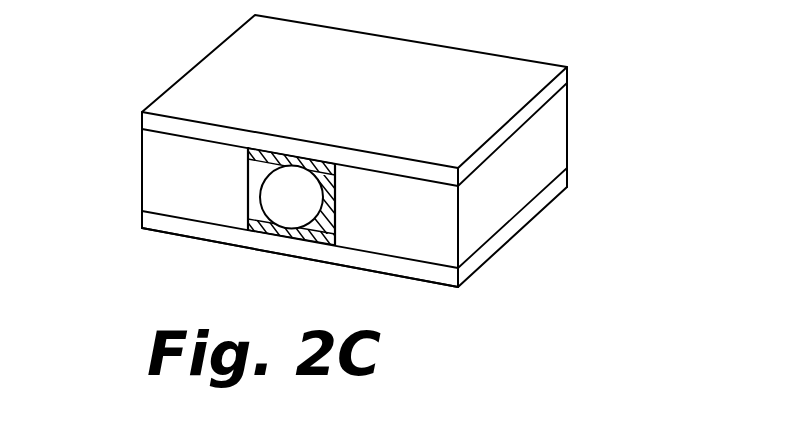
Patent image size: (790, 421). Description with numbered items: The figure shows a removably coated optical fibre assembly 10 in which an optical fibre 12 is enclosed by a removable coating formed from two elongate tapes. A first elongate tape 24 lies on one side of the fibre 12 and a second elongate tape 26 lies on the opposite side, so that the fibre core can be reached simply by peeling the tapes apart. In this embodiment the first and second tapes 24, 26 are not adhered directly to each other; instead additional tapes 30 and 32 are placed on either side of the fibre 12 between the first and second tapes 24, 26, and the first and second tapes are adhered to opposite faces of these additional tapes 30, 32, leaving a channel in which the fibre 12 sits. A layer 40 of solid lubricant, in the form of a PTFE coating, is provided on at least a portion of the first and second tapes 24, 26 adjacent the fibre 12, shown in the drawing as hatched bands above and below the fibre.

The optical coupling assembly 10 is at (390, 286).
The optical fibre 12 is at (295, 217).
The first elongate tape 24 is at (205, 235).
The second elongate tape 26 is at (200, 88).
The additional tape 30 is at (165, 172).
The additional tape 32 is at (423, 227).
The layer of solid lubricant 40 is at (333, 172).